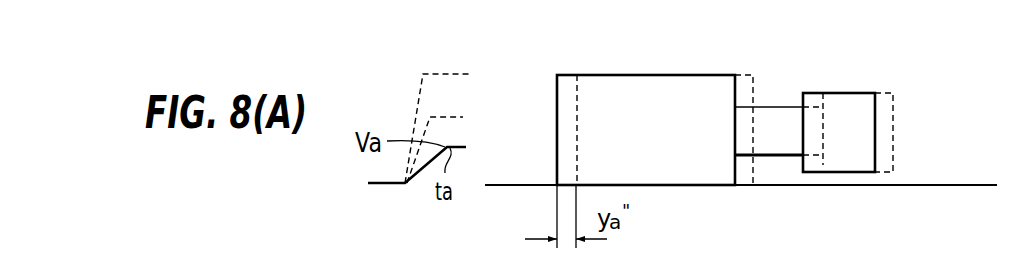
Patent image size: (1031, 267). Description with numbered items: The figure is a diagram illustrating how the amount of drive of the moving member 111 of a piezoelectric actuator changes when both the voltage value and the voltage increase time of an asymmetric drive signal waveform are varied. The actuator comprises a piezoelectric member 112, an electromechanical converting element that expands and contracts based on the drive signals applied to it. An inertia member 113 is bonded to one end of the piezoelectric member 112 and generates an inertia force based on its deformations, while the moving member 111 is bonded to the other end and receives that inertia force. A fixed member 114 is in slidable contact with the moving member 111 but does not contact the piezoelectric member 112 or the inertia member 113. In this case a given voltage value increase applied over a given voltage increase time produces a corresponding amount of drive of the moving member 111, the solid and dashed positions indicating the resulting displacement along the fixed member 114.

The moving member 111 is at (648, 75).
The piezoelectric member 112 is at (770, 127).
The inertia member 113 is at (840, 110).
The fixed member 114 is at (942, 185).